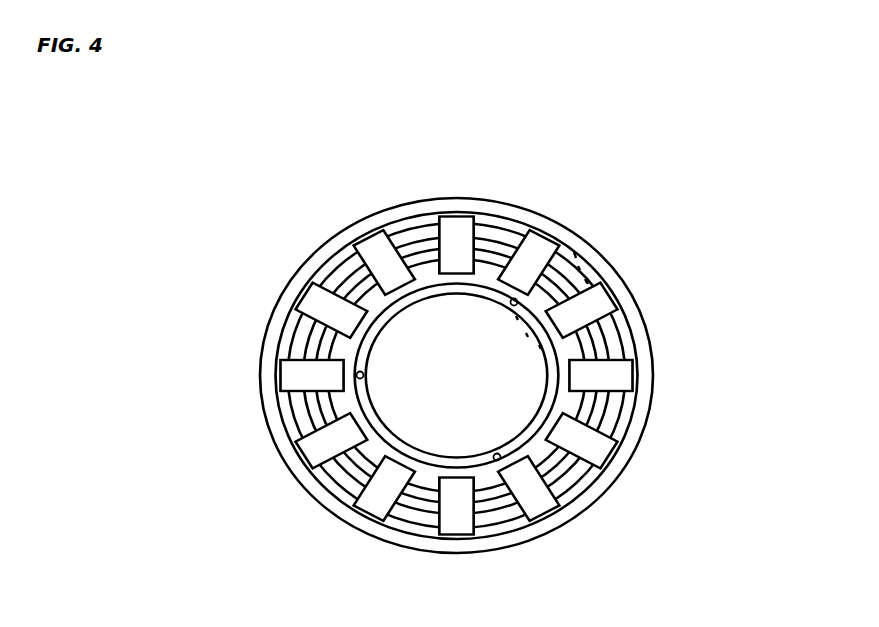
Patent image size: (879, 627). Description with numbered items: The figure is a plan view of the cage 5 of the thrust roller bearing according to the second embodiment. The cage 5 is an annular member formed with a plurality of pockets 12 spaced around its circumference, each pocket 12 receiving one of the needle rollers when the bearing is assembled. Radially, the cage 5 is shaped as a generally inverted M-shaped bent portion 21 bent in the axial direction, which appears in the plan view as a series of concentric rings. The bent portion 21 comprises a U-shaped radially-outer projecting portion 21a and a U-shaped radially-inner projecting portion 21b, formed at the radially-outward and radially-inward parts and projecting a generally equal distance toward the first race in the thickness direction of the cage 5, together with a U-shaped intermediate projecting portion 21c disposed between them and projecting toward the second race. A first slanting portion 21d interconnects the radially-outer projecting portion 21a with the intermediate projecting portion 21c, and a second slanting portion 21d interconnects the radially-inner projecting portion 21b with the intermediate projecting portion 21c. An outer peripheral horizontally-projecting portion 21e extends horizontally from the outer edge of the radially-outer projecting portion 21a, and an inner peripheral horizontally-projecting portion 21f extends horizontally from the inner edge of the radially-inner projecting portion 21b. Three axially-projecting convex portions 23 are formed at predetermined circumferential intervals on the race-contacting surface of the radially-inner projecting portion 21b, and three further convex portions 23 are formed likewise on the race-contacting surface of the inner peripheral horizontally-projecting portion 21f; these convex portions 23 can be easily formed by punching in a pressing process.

The cage 5 is at (471, 194).
The pocket 12 is at (382, 246).
The generally inverted M-shaped bent portion 21 is at (494, 243).
The radially-outer projecting portion 21a is at (578, 268).
The radially-inner projecting portion 21b is at (526, 335).
The intermediate projecting portion 21c is at (585, 281).
The slanting portion 21d is at (586, 282).
The outer peripheral horizontally-projecting portion 21e is at (574, 255).
The inner peripheral horizontally-projecting portion 21f is at (516, 318).
The axially-projecting convex portion 23 is at (511, 304).